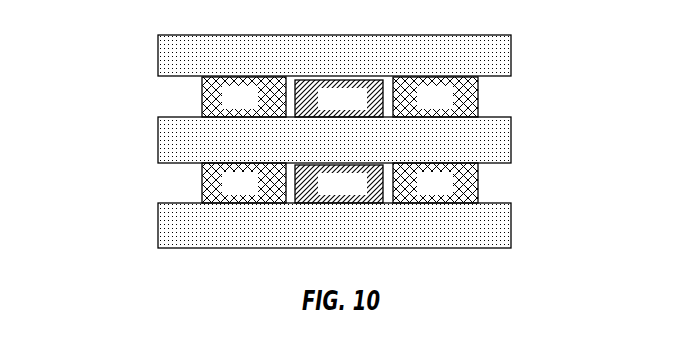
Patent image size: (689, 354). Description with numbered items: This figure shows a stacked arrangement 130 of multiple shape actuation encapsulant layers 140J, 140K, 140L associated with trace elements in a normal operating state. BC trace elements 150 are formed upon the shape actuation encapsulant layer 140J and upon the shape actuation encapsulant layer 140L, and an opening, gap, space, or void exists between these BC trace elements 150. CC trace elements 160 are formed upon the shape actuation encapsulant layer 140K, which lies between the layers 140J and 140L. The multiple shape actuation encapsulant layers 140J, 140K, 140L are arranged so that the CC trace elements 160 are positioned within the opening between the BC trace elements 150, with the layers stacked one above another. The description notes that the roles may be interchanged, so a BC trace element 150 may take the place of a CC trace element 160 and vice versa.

The stacked assembly 130 is at (313, 141).
The shape actuation encapsulant layer 140L is at (495, 58).
The shape actuation encapsulant layer 140K is at (501, 134).
The shape actuation encapsulant layer 140J is at (502, 229).
The BC trace element 150 is at (340, 140).
The CC trace element 160 is at (339, 141).